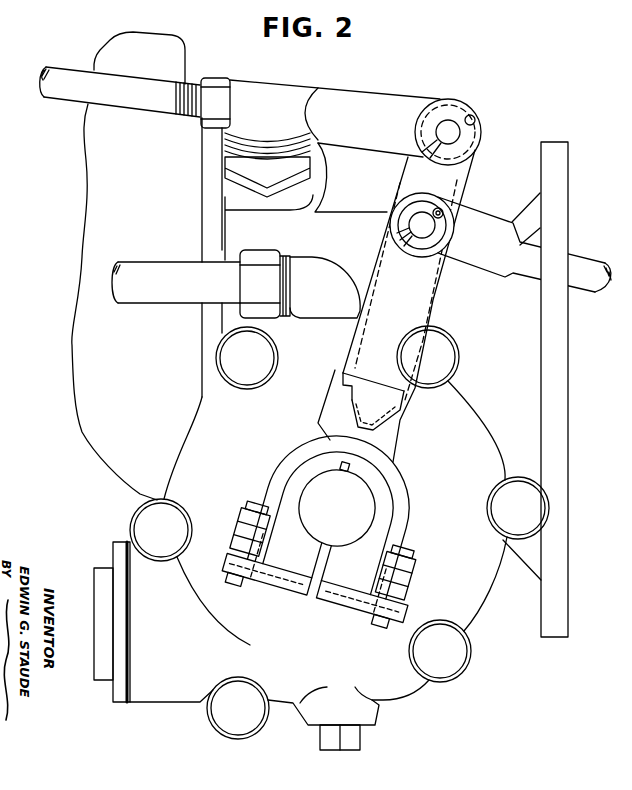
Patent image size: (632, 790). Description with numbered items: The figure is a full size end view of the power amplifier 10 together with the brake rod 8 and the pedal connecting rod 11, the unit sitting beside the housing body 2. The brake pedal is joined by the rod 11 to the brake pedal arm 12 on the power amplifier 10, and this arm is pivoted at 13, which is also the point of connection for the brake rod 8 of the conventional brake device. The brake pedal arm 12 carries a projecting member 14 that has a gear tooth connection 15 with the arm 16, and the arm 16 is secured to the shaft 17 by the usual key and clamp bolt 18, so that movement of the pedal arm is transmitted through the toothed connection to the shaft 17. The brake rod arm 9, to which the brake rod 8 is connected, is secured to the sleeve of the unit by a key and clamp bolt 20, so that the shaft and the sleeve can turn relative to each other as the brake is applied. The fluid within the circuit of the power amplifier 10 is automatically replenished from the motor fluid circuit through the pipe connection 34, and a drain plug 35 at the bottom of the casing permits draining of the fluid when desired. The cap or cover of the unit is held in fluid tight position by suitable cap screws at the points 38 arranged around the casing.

The housing body 2 is at (90, 283).
The brake rod 8 is at (567, 263).
The brake rod arm 9 is at (403, 408).
The power amplifier 10 is at (321, 532).
The rod 11 is at (163, 97).
The brake pedal arm 12 is at (445, 178).
The pivot 13 is at (422, 227).
The projecting member 14 is at (409, 306).
The gear tooth connection 15 is at (361, 405).
The arm 16 is at (333, 509).
The shaft 17 is at (338, 504).
The clamp bolt 18 is at (345, 513).
The clamp bolt 20 is at (337, 553).
The pipe connection 34 is at (172, 290).
The drain plug 35 is at (348, 735).
The cap screw points 38 is at (150, 523).